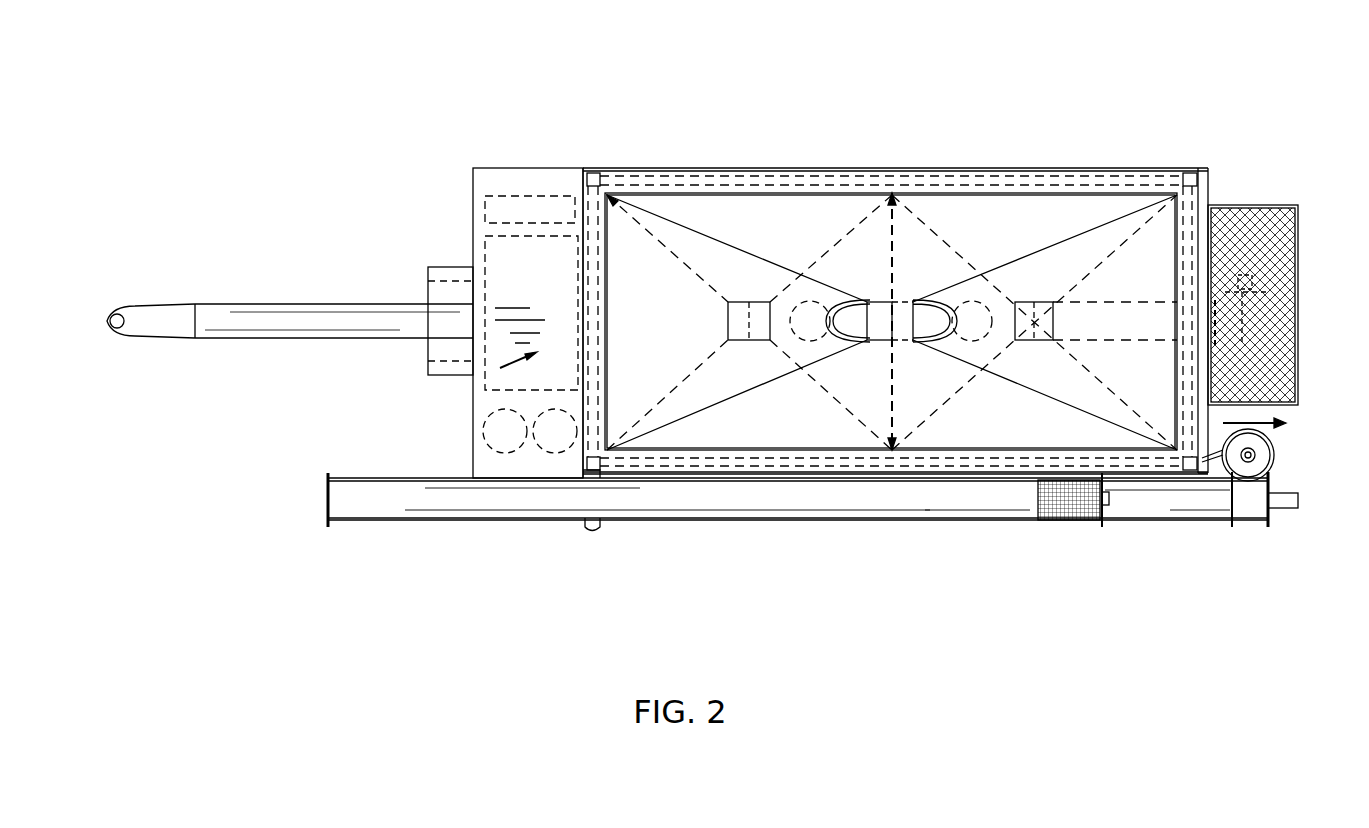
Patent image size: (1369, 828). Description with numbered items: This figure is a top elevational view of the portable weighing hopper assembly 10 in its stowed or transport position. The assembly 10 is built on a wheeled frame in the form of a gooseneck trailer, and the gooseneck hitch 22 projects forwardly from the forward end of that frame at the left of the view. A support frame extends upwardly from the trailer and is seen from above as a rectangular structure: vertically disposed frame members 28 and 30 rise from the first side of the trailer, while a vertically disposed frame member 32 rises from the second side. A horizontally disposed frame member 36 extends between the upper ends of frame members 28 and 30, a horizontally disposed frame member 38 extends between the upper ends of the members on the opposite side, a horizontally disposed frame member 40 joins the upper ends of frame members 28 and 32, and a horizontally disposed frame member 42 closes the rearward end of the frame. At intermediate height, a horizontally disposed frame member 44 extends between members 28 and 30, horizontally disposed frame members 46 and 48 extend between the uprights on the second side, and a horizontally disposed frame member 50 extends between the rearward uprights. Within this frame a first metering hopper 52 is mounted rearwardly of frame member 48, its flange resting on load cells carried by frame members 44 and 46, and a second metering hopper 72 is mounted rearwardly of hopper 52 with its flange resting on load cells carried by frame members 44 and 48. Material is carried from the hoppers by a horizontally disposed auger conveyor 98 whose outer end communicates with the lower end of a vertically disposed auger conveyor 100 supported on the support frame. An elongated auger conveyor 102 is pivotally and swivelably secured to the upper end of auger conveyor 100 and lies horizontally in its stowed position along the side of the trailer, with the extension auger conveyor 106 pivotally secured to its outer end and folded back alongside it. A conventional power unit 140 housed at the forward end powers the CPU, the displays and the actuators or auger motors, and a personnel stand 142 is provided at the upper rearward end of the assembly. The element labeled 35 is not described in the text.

The portable weighing hopper assembly 10 is at (476, 146).
The gooseneck hitch 22 is at (280, 308).
The vertically disposed frame member 28 is at (585, 474).
The vertically disposed frame member 30 is at (1200, 474).
The vertically disposed frame member 32 is at (583, 170).
The frame right member 35 is at (1193, 207).
The horizontally disposed frame member 36 is at (911, 474).
The horizontally disposed frame member 38 is at (937, 168).
The horizontally disposed frame member 40 is at (600, 297).
The horizontally disposed frame member 42 is at (1190, 245).
The horizontally disposed frame member 44 is at (865, 455).
The horizontally disposed frame member 46 is at (990, 172).
The horizontally disposed frame member 48 is at (593, 240).
The horizontally disposed frame member 50 is at (1205, 195).
The first metering hopper 52 is at (837, 228).
The second metering hopper 72 is at (1101, 230).
The horizontally disposed auger conveyor 98 is at (1258, 426).
The vertically disposed auger conveyor 100 is at (1250, 482).
The elongated auger conveyor 102 is at (1138, 496).
The extension auger conveyor 106 is at (1023, 498).
The power unit 140 is at (482, 373).
The personnel stand 142 is at (1280, 237).